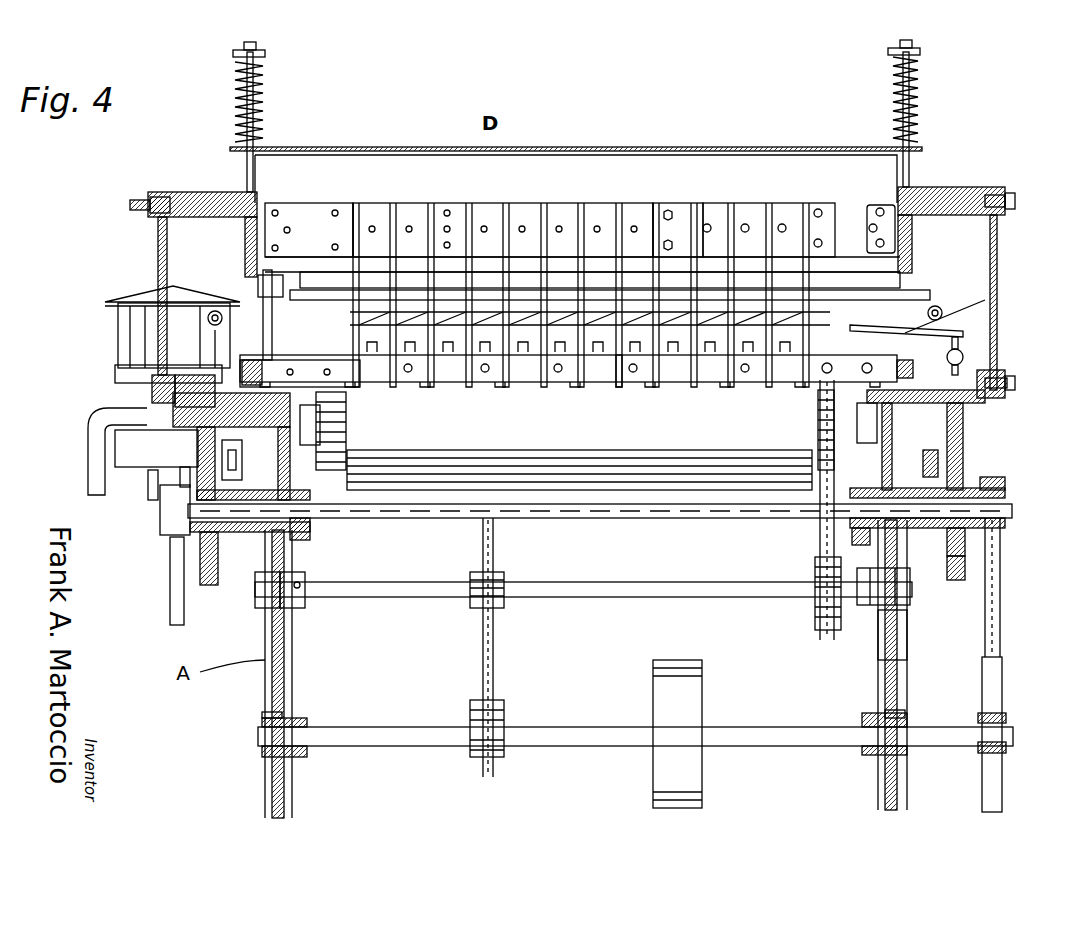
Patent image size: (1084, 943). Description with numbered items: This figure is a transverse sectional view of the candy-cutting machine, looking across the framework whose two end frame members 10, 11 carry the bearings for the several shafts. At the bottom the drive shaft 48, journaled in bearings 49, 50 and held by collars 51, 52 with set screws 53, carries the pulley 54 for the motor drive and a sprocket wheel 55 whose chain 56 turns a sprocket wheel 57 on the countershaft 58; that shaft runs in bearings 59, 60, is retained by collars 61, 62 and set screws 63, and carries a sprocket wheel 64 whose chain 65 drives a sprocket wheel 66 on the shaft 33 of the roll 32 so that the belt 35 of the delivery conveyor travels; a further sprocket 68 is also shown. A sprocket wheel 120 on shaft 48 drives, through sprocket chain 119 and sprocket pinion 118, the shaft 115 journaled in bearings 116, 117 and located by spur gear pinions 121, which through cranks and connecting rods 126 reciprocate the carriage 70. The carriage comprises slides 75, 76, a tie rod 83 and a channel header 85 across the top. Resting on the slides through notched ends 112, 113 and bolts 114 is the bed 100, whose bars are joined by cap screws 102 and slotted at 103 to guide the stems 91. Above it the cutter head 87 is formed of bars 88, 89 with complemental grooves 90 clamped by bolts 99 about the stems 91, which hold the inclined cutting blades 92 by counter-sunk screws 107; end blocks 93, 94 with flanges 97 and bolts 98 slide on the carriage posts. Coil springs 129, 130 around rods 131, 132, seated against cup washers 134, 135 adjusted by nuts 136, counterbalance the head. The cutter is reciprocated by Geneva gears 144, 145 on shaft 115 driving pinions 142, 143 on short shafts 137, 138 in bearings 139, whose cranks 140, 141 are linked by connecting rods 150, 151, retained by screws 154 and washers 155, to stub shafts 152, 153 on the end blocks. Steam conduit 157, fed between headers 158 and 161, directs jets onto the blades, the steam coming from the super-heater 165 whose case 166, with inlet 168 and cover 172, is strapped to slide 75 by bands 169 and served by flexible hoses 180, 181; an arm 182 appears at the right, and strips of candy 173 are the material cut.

The end frame member 10 is at (270, 787).
The end frame member 11 is at (898, 790).
The roll 32 is at (305, 490).
The shaft 33 is at (310, 410).
The belt 35 is at (425, 490).
The drive shaft 48 is at (425, 746).
The bearing 49 is at (265, 718).
The bearing 50 is at (905, 725).
The collar 51 is at (300, 757).
The collar 52 is at (870, 755).
The set screw 53 is at (300, 718).
The pulley 54 is at (680, 668).
The sprocket wheel 55 is at (505, 715).
The chain 56 is at (495, 665).
The sprocket wheel 57 is at (478, 608).
The countershaft 58 is at (600, 597).
The bearing 59 is at (262, 608).
The bearing 60 is at (907, 630).
The collar 61 is at (298, 608).
The collar 62 is at (866, 605).
The set screw 63 is at (302, 585).
The sprocket wheel 64 is at (820, 625).
The chain 65 is at (818, 530).
The sprocket wheel 66 is at (815, 465).
The sprocket 68 is at (347, 420).
The carriage 70 is at (605, 155).
The slide 75 is at (263, 346).
The slide 76 is at (965, 352).
The tie rod 83 is at (278, 275).
The header 85 is at (412, 147).
The cutter head 87 is at (625, 210).
The bar 88 is at (520, 210).
The bar 89 is at (745, 205).
The groove 90 is at (395, 215).
The stem 91 is at (390, 280).
The cutting blade 92 is at (485, 318).
The end block 93 is at (245, 232).
The end block 94 is at (912, 238).
The flange 97 is at (870, 208).
The bolt 98 is at (290, 228).
The bolt 99 is at (670, 242).
The bed 100 is at (560, 382).
The cap screw 102 is at (410, 374).
The slot 103 is at (613, 375).
The counter-sunk screw 107 is at (460, 315).
The end 112 is at (280, 360).
The end 113 is at (897, 368).
The bolt 114 is at (285, 310).
The shaft 115 is at (590, 518).
The bearing 116 is at (240, 532).
The bearing 117 is at (947, 545).
The sprocket pinion 118 is at (1005, 483).
The sprocket chain 119 is at (1000, 600).
The sprocket wheel 120 is at (1002, 690).
The spur gear pinion 121 is at (310, 528).
The connecting rod 126 is at (938, 460).
The coil spring 129 is at (262, 105).
The coil spring 130 is at (893, 98).
The rod 131 is at (235, 90).
The rod 132 is at (920, 82).
The cup washer 134 is at (233, 53).
The cup washer 135 is at (920, 52).
The nut 136 is at (256, 46).
The short shaft 137 is at (200, 445).
The short shaft 138 is at (963, 430).
The bearing 139 is at (882, 470).
The crank 140 is at (152, 385).
The crank 141 is at (1000, 372).
The pinion 142 is at (200, 375).
The pinion 143 is at (985, 395).
The Geneva gear 144 is at (212, 585).
The Geneva gear 145 is at (958, 580).
The connecting rod 150 is at (158, 252).
The connecting rod 151 is at (997, 245).
The stub shaft 152 is at (170, 192).
The stub shaft 153 is at (990, 187).
The screw 154 is at (152, 197).
The washer 155 is at (138, 210).
The steam conduit 157 is at (352, 290).
The header 158 is at (215, 311).
The header 161 is at (938, 306).
The super-heater 165 is at (118, 310).
The case 166 is at (140, 325).
The inlet 168 is at (115, 408).
The band 169 is at (115, 372).
The cover 172 is at (140, 292).
The strip of candy 173 is at (482, 352).
The flexible hose 180 is at (90, 465).
The flexible hose 181 is at (170, 612).
The arm 182 is at (985, 300).